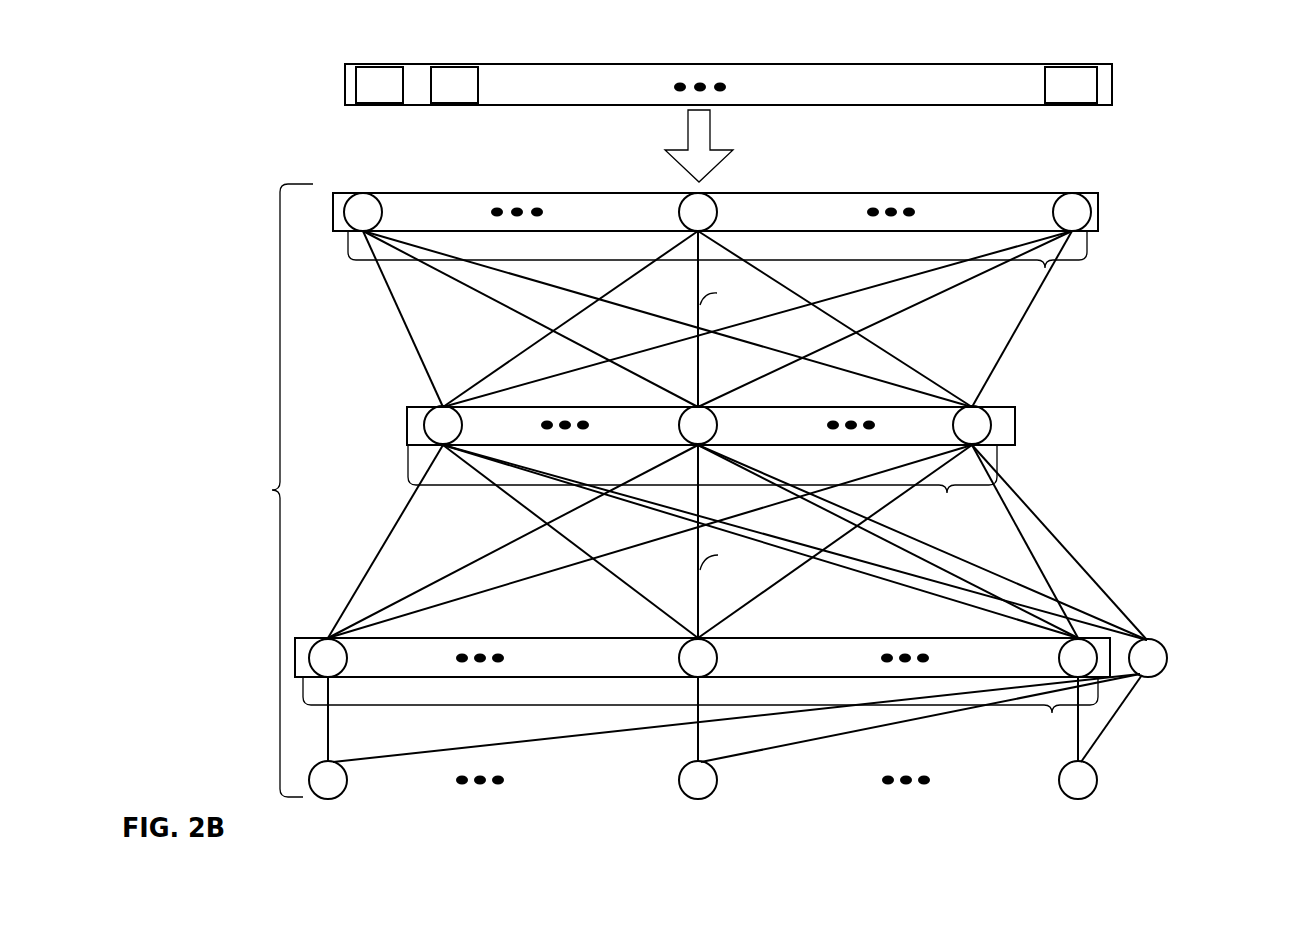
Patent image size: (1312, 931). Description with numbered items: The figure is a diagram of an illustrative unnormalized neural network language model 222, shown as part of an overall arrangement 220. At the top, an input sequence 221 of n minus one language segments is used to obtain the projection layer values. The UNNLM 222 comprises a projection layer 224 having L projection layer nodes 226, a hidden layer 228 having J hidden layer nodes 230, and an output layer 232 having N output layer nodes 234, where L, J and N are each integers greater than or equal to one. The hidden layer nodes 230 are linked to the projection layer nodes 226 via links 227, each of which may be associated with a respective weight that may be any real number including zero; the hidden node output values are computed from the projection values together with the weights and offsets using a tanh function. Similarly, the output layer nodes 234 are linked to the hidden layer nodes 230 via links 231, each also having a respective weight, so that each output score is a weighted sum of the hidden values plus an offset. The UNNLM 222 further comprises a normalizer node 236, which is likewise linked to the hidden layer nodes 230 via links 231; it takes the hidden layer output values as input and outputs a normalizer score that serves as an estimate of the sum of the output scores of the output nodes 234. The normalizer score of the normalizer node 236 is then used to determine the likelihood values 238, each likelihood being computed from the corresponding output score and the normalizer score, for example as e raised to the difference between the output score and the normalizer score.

The neural network language model system 220 is at (1251, 84).
The input sequence 221 is at (1112, 76).
The unnormalized neural network language model 222 is at (652, 494).
The projection layer 224 is at (1098, 195).
The projection layer nodes 226 is at (363, 193).
The links 227 is at (1007, 347).
The hidden layer 228 is at (1015, 409).
The hidden layer nodes 230 is at (443, 407).
The links 231 is at (1043, 518).
The output layer 232 is at (810, 638).
The output layer nodes 234 is at (318, 642).
The normalizer node 236 is at (1147, 639).
The likelihood values 238 is at (678, 784).